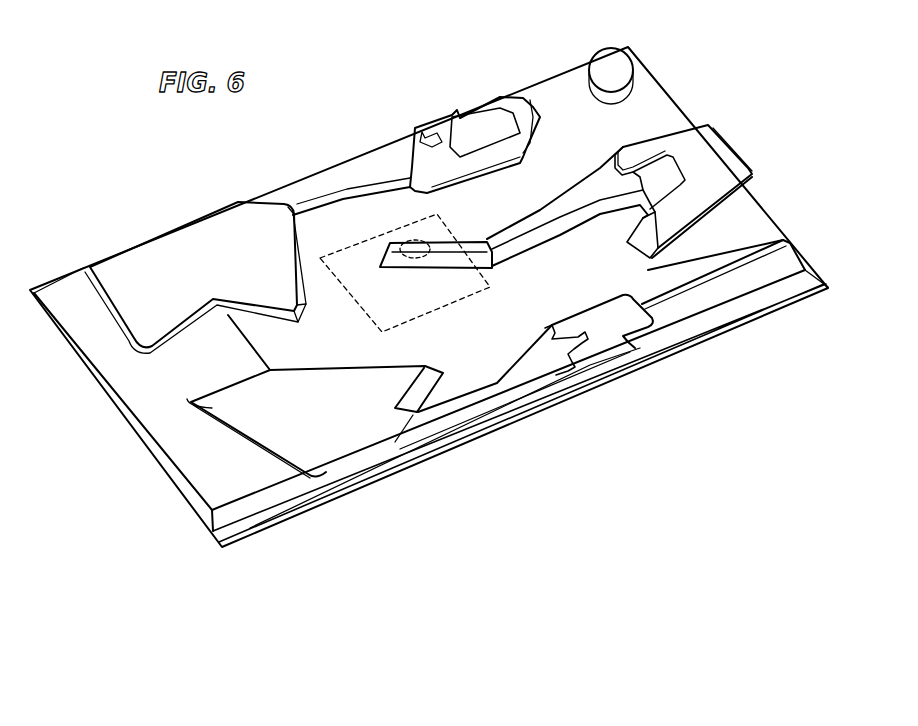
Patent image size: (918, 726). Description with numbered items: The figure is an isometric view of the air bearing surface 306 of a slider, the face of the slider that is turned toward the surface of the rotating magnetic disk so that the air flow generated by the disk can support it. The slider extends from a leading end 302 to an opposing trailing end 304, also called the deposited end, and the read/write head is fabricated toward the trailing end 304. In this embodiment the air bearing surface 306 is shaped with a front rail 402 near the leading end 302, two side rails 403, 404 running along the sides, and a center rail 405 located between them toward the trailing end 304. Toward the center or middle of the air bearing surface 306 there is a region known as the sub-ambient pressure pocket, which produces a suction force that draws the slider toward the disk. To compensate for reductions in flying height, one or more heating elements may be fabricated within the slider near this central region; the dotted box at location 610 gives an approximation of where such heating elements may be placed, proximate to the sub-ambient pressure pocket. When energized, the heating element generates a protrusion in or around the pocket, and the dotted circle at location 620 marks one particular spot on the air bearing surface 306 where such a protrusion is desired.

The leading end 302 is at (135, 443).
The trailing end 304 is at (748, 138).
The air bearing surface 306 is at (550, 99).
The front rail 402 is at (137, 390).
The side rail 403 is at (375, 163).
The side rail 404 is at (483, 393).
The center rail 405 is at (517, 233).
The location of heating element 610 is at (368, 253).
The location of desired protrusion 620 is at (418, 242).